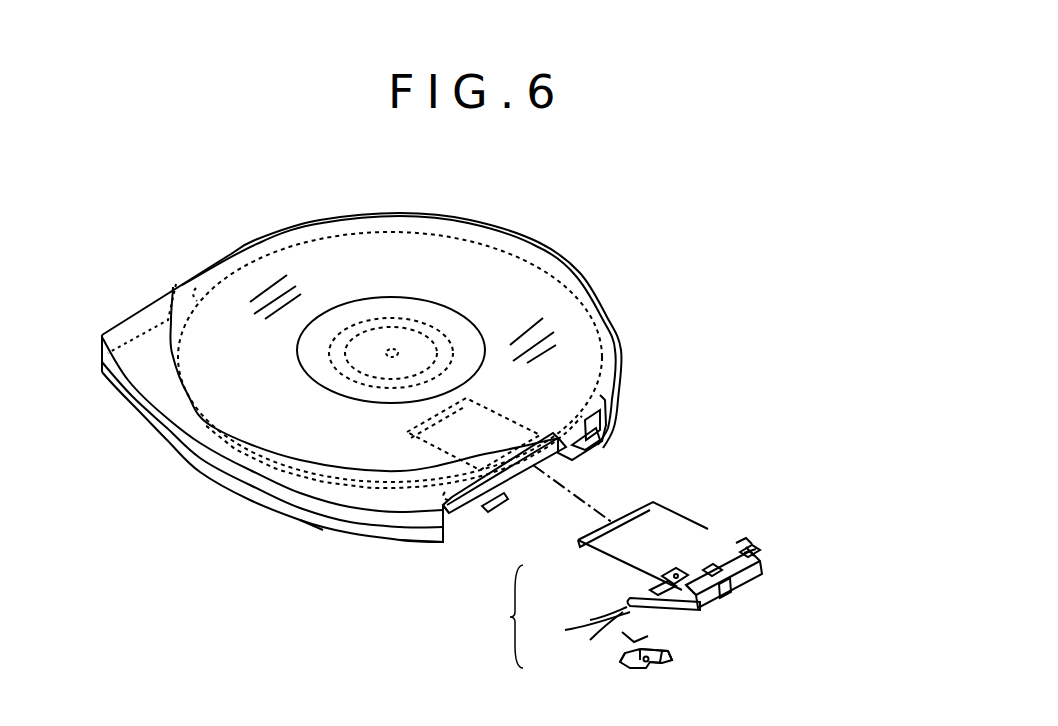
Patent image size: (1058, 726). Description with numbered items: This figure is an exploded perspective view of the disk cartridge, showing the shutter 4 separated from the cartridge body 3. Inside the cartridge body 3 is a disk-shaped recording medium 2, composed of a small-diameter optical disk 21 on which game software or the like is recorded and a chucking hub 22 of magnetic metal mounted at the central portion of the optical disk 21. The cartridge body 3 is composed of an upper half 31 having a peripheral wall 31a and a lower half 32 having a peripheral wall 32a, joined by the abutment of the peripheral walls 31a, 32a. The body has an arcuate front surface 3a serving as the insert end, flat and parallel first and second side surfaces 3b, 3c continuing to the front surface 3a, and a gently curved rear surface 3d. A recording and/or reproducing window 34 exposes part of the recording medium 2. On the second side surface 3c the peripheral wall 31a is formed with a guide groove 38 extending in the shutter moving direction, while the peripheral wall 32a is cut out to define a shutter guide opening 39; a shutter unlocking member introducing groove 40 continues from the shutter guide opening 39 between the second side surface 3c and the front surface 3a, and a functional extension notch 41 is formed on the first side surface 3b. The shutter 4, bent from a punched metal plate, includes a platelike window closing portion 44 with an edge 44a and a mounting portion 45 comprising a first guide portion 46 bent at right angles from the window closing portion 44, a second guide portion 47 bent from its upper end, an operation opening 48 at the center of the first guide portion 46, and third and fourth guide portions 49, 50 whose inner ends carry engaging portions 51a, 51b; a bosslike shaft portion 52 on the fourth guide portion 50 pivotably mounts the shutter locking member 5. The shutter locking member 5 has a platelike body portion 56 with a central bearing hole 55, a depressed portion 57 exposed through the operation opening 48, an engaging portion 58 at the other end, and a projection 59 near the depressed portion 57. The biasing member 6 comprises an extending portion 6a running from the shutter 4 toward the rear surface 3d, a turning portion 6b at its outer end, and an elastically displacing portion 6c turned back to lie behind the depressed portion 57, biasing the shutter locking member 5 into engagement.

The disk-shaped recording medium 2 is at (346, 150).
The optical disk 21 is at (310, 237).
The chucking hub 22 is at (373, 320).
The cartridge body 3 is at (163, 283).
The front surface 3a is at (543, 243).
The first side surface 3b is at (157, 298).
The second side surface 3c is at (427, 547).
The rear surface 3d is at (322, 530).
The upper half 31 is at (198, 460).
The peripheral wall of the upper half 31a is at (407, 527).
The lower half 32 is at (249, 505).
The peripheral wall of the lower half 32a is at (437, 540).
The recording and/or reproducing window 34 is at (505, 481).
The guide groove 38 is at (460, 515).
The shutter guide opening 39 is at (482, 506).
The shutter unlocking member introducing groove 40 is at (601, 437).
The functional extension notch 41 is at (176, 284).
The shutter 4 is at (738, 526).
The window closing portion 44 is at (667, 509).
The circuit board edge 44a is at (617, 519).
The mounting portion 45 is at (787, 553).
The first guide portion 46 is at (752, 574).
The second guide portion 47 is at (745, 543).
The operation opening 48 is at (732, 590).
The third guide portion 49 is at (763, 557).
The fourth guide portion 50 is at (708, 566).
The engaging portion 51a is at (757, 548).
The engaging portion 51b is at (652, 588).
The shaft portion 52 is at (679, 572).
The shutter locking member 5 is at (634, 678).
The bearing hole 55 is at (645, 668).
The body portion 56 is at (662, 650).
The depressed portion 57 is at (672, 660).
The engaging portion 58 is at (625, 664).
The projection 59 is at (665, 662).
The biasing member 6 is at (571, 616).
The extending portion 6a is at (590, 640).
The turning portion 6b is at (590, 620).
The elastically displacing portion 6c is at (628, 600).